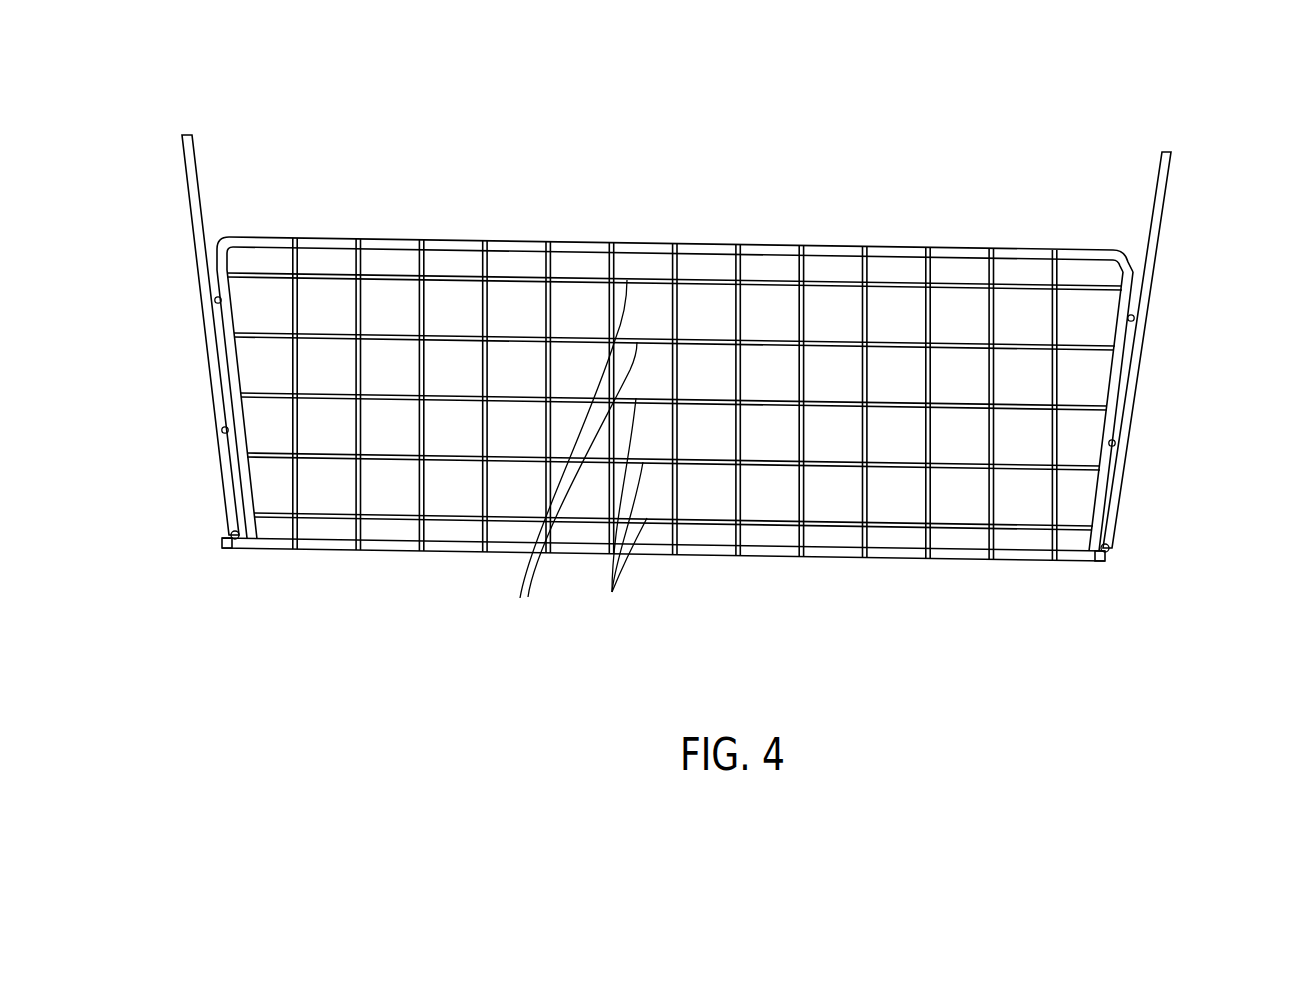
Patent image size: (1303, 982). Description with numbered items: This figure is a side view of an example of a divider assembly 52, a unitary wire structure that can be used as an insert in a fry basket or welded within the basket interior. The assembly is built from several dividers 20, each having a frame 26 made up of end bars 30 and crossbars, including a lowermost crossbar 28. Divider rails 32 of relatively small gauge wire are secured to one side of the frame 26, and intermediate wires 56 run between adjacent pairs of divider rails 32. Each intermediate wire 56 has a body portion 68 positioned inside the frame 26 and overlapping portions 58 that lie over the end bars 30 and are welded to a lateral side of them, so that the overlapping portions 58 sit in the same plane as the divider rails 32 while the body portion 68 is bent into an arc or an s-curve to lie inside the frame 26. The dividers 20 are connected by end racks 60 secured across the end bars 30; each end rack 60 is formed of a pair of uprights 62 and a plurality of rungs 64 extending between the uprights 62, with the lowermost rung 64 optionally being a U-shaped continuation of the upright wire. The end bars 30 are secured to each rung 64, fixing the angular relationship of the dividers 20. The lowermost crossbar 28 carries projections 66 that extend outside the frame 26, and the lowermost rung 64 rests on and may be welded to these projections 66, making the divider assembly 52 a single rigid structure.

The divider 20 is at (957, 200).
The frame 26 is at (1103, 236).
The lowermost crossbar 28 is at (790, 246).
The end bar 30 is at (236, 361).
The divider rail 32 is at (420, 263).
The divider assembly 52 is at (1035, 97).
The intermediate wire 56 is at (1090, 290).
The overlapping portion 58 is at (228, 275).
The end rack 60 is at (158, 205).
The upright 62 is at (226, 455).
The rung 64 is at (231, 535).
The projection 66 is at (232, 550).
The body portion 68 is at (612, 606).